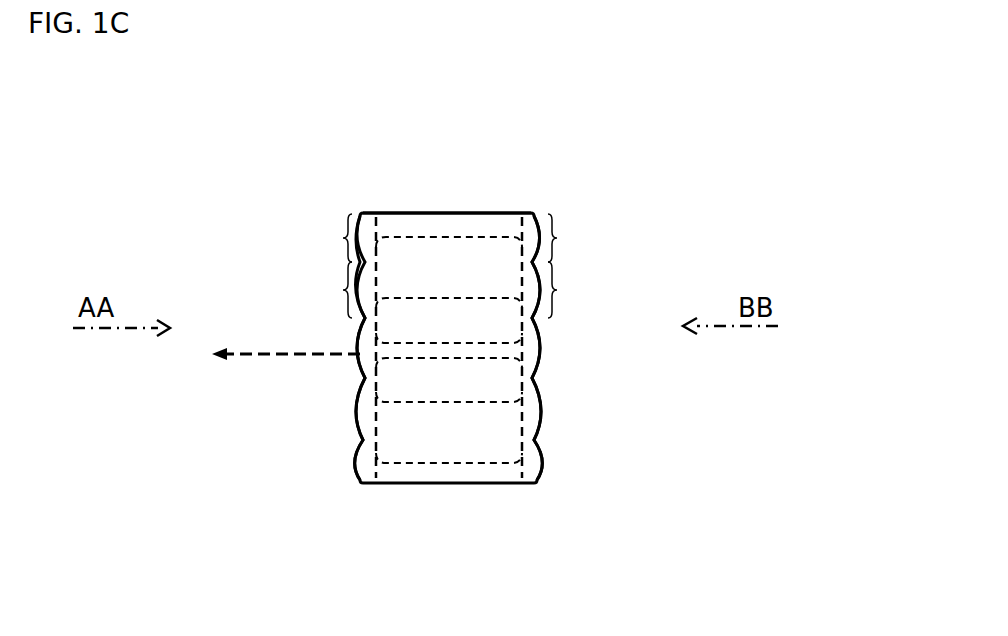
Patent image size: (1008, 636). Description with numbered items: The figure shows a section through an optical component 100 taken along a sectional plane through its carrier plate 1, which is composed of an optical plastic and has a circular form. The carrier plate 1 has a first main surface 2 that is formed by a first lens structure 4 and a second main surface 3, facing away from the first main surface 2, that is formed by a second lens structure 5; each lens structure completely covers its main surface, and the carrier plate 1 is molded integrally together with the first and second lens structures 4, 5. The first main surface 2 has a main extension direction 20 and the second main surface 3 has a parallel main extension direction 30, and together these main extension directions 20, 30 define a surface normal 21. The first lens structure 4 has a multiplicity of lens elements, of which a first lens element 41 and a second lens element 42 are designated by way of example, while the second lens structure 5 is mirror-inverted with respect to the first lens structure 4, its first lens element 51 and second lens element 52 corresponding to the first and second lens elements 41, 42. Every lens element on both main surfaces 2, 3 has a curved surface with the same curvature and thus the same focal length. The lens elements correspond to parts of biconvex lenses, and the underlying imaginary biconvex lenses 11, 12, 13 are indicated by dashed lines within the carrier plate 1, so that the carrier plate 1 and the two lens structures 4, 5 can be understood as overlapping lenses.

The optical component 100 is at (369, 58).
The carrier plate 1 is at (473, 213).
The imaginary biconvex lens 11 is at (424, 213).
The imaginary biconvex lens 12 is at (435, 403).
The imaginary biconvex lens 13 is at (482, 463).
The first main surface 2 is at (279, 348).
The first lens structure 4 is at (355, 440).
The second main surface 3 is at (613, 348).
The second lens structure 5 is at (540, 440).
The main extension direction 20 is at (359, 473).
The main extension direction 30 is at (538, 473).
The surface normal 21 is at (237, 357).
The first lens element 41 is at (340, 292).
The second lens element 42 is at (340, 238).
The first lens element 51 is at (560, 290).
The second lens element 52 is at (560, 237).